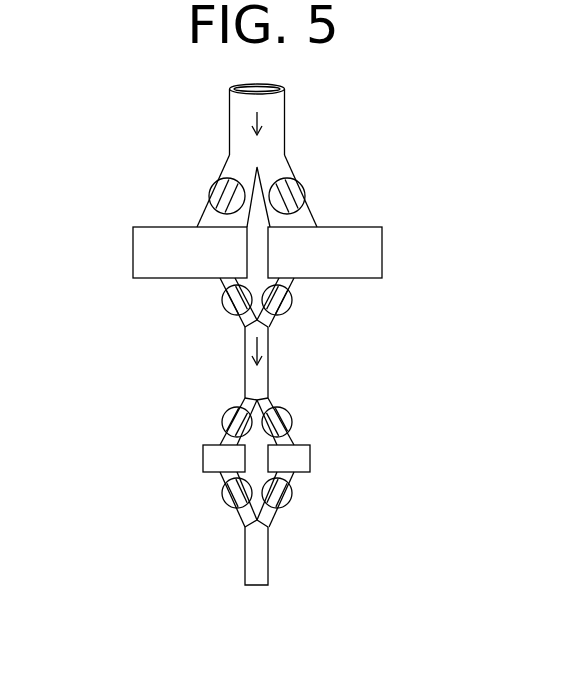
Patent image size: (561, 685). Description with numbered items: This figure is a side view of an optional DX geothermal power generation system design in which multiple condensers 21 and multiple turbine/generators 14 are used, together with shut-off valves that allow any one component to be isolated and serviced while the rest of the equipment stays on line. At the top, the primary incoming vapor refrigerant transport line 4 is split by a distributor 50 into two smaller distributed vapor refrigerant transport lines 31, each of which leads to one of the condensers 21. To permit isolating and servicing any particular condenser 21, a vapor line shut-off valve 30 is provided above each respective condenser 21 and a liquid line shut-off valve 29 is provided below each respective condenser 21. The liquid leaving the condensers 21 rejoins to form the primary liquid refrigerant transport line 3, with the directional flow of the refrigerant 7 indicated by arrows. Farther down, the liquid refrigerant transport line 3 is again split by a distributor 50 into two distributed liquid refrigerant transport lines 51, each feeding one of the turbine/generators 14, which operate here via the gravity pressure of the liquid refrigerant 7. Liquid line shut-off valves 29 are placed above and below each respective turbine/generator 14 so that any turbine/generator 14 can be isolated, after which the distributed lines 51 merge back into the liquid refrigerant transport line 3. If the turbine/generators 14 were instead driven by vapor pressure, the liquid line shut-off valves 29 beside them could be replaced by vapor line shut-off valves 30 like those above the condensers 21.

The liquid refrigerant transport line 3 is at (245, 372).
The primary incoming vapor refrigerant transport line 4 is at (285, 110).
The refrigerant 7 is at (255, 120).
The turbine/generator 14 is at (203, 458).
The condenser 21 is at (133, 248).
The liquid line shut-off valve 29 is at (220, 303).
The vapor line shut-off valve 30 is at (212, 188).
The distributed vapor refrigerant transport line 31 is at (200, 214).
The distributor 50 is at (262, 166).
The distributed liquid refrigerant transport line 51 is at (220, 283).